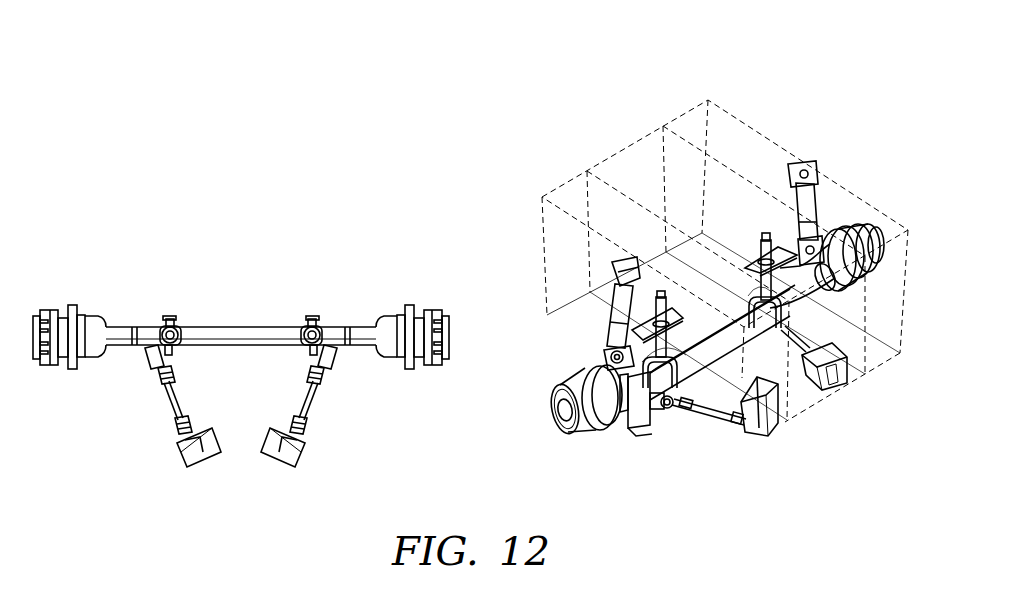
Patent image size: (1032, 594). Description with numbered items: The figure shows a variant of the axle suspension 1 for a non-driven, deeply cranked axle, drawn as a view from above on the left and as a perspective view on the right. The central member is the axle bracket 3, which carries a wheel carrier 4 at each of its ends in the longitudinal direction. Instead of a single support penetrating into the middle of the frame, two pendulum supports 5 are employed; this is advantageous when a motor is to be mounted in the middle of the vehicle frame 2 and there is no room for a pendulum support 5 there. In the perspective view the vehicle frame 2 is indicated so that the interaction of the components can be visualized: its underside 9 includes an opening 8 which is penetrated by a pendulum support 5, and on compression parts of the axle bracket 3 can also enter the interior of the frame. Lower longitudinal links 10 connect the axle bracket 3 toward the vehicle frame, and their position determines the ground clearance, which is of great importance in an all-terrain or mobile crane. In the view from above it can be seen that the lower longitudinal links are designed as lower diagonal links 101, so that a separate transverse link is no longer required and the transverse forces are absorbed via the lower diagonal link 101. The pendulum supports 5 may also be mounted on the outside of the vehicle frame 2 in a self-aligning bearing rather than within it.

The axle suspension 1 is at (562, 350).
The vehicle frame 2 is at (768, 140).
The axle bracket 3 is at (205, 333).
The wheel carrier 4 is at (62, 283).
The pendulum support 5 is at (161, 327).
The opening 8 is at (745, 295).
The underside 9 is at (860, 370).
The lower longitudinal link 10 is at (697, 410).
The lower diagonal link 101 is at (315, 397).